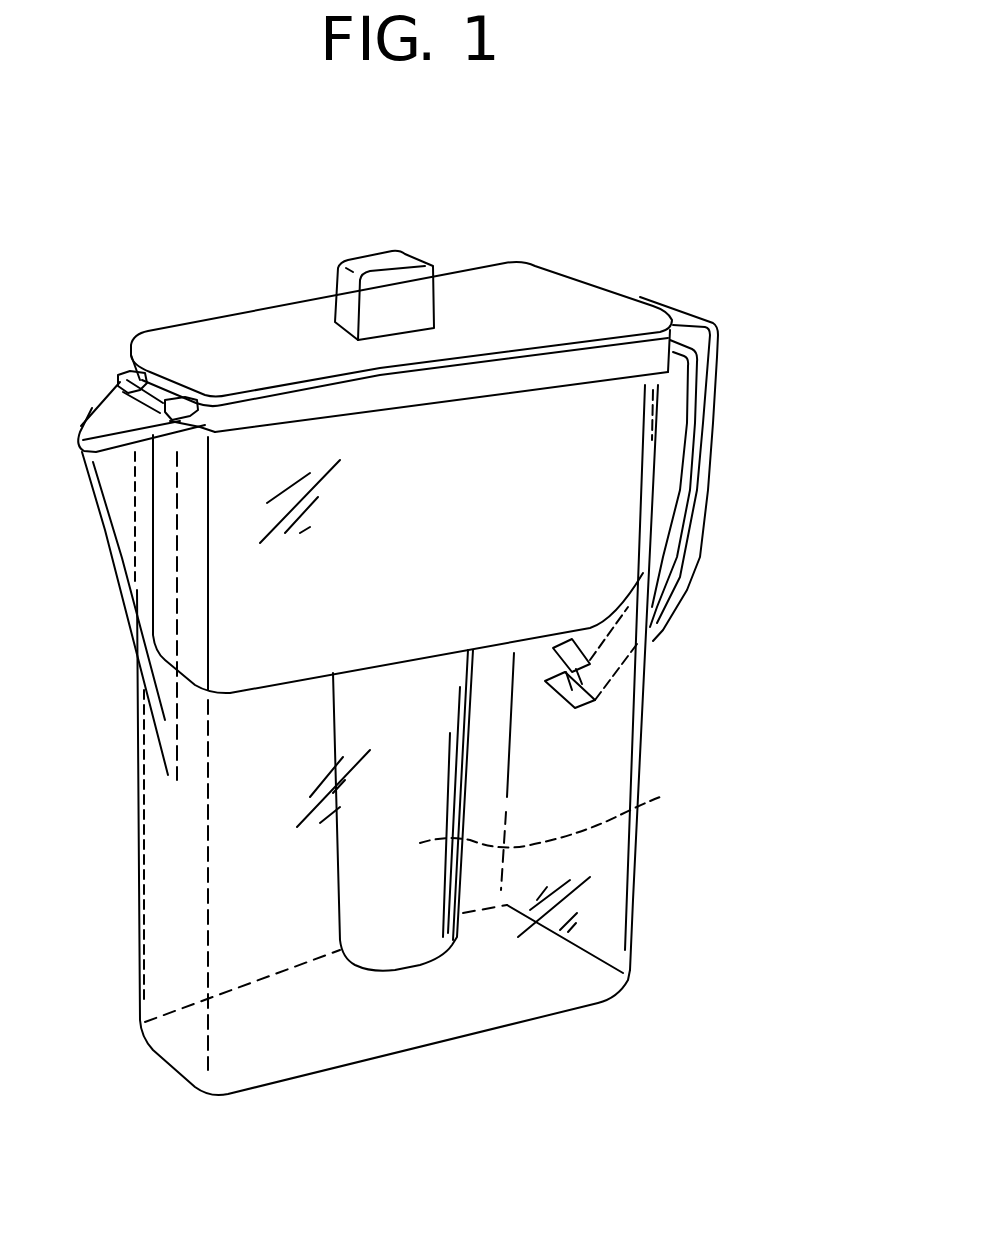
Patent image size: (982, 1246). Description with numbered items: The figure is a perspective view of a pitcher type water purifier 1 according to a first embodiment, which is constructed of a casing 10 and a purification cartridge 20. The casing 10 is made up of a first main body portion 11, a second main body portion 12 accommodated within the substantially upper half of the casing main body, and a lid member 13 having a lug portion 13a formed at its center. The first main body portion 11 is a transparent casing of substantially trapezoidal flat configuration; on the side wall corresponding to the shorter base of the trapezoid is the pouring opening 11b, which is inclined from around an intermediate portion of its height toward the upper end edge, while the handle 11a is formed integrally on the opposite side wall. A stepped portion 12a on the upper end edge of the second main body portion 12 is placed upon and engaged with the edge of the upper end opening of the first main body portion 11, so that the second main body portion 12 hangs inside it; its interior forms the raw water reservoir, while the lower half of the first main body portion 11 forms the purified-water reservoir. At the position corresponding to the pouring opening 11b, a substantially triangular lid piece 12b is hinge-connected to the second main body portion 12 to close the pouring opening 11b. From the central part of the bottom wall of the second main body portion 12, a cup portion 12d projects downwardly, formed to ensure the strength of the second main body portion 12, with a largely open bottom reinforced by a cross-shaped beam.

The pitcher type water purifier 1 is at (613, 178).
The casing 10 is at (803, 262).
The first main body portion 11 is at (653, 637).
The handle 11a is at (709, 452).
The pouring opening 11b is at (92, 490).
The second main body portion 12 is at (668, 397).
The stepped portion 12a is at (437, 392).
The lid piece 12b is at (92, 406).
The cup portion 12d is at (335, 893).
The lid member 13 is at (599, 282).
The lug portion 13a is at (378, 257).
The purification cartridge 20 is at (660, 797).